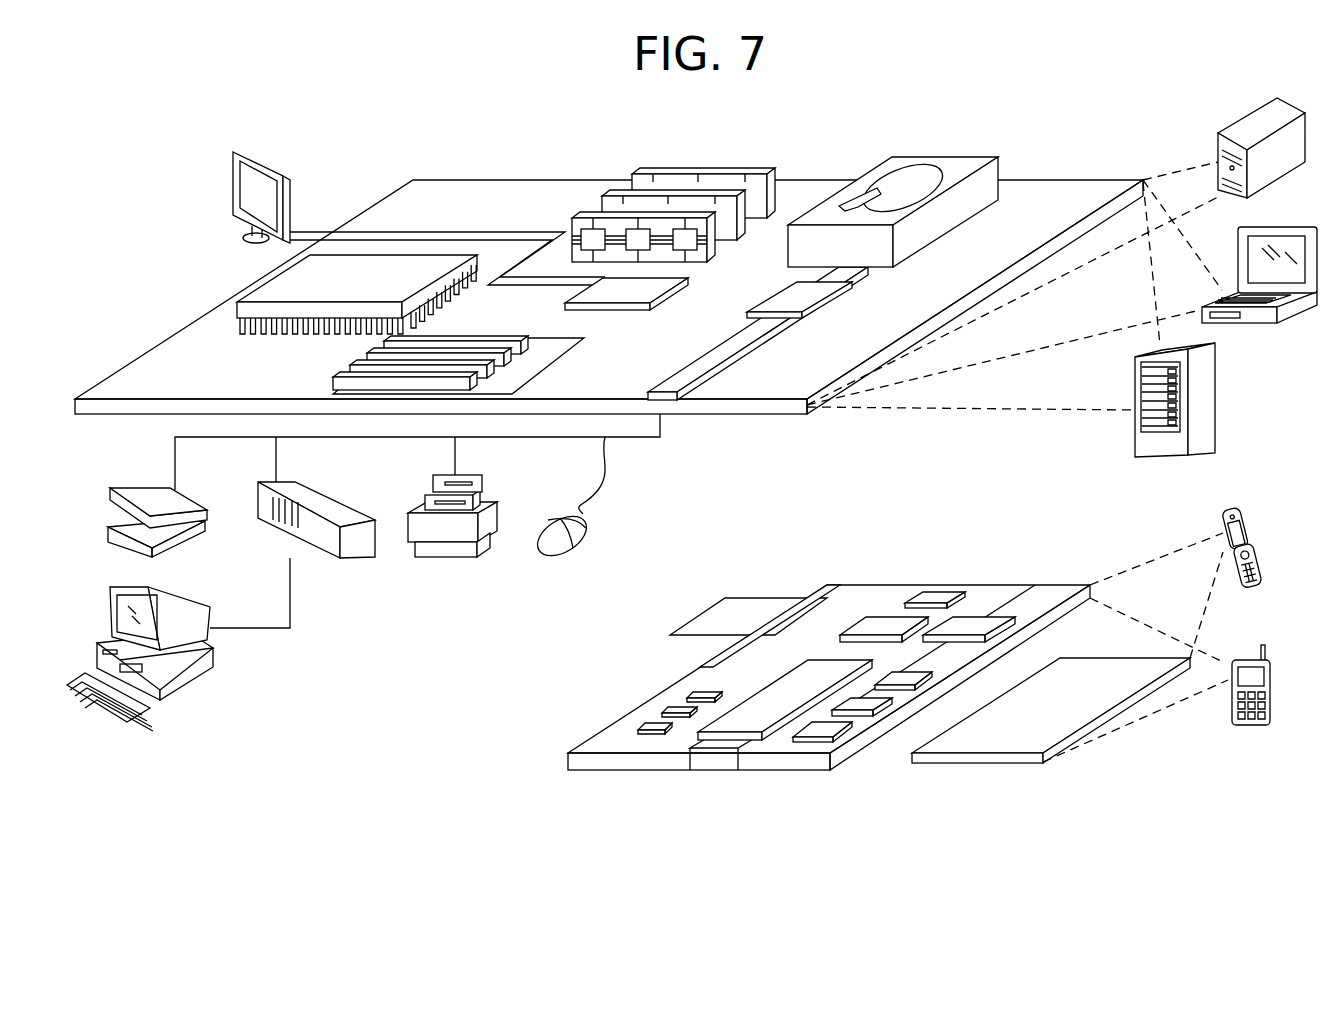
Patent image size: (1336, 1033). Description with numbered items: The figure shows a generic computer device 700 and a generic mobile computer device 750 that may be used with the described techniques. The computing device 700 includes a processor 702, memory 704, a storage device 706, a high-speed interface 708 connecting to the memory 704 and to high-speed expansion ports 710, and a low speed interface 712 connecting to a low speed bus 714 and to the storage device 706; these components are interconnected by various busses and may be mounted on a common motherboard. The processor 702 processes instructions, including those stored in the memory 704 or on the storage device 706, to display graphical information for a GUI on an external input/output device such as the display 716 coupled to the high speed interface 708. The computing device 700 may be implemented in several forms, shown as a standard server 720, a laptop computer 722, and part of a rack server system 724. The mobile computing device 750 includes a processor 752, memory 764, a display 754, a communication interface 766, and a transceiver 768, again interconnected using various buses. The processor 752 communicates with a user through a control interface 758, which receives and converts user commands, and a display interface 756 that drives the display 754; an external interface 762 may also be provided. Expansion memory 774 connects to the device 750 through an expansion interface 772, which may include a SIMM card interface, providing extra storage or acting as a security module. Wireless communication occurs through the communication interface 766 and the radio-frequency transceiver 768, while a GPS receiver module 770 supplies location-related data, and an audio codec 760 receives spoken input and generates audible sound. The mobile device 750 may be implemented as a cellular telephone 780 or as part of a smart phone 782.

The computing device 700 is at (368, 126).
The processor 702 is at (260, 287).
The memory 704 is at (705, 184).
The storage device 706 is at (936, 158).
The high-speed interface 708 is at (640, 288).
The high-speed expansion ports 710 is at (352, 365).
The low speed interface 712 is at (781, 298).
The low speed bus 714 is at (663, 386).
The display 716 is at (240, 150).
The standard server 720 is at (1240, 130).
The laptop computer 722 is at (1293, 225).
The rack server system 724 is at (1215, 401).
The mobile computing device 750 is at (530, 775).
The processor 752 is at (760, 696).
The display 754 is at (1090, 664).
The display interface 756 is at (850, 731).
The control interface 758 is at (895, 700).
The audio codec 760 is at (908, 673).
The external interface 762 is at (714, 760).
The memory 764 is at (673, 704).
The communication interface 766 is at (882, 617).
The transceiver 768 is at (973, 617).
The GPS receiver module 770 is at (940, 600).
The expansion interface 772 is at (812, 598).
The expansion memory 774 is at (731, 598).
The cellular telephone 780 is at (1233, 511).
The smart phone 782 is at (1250, 656).